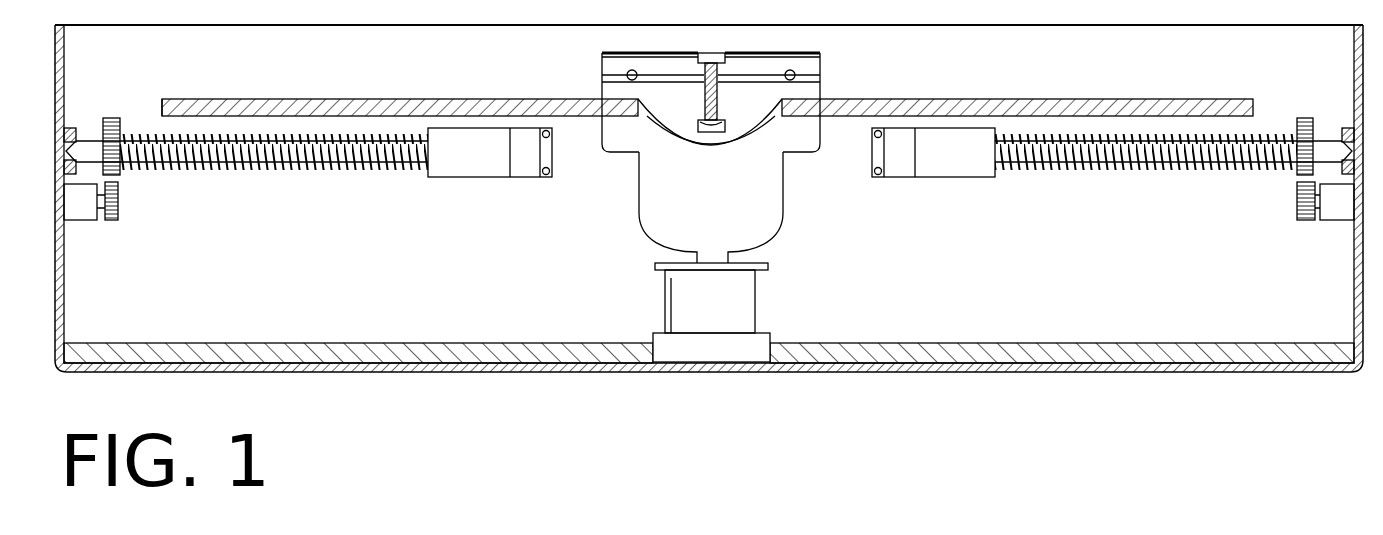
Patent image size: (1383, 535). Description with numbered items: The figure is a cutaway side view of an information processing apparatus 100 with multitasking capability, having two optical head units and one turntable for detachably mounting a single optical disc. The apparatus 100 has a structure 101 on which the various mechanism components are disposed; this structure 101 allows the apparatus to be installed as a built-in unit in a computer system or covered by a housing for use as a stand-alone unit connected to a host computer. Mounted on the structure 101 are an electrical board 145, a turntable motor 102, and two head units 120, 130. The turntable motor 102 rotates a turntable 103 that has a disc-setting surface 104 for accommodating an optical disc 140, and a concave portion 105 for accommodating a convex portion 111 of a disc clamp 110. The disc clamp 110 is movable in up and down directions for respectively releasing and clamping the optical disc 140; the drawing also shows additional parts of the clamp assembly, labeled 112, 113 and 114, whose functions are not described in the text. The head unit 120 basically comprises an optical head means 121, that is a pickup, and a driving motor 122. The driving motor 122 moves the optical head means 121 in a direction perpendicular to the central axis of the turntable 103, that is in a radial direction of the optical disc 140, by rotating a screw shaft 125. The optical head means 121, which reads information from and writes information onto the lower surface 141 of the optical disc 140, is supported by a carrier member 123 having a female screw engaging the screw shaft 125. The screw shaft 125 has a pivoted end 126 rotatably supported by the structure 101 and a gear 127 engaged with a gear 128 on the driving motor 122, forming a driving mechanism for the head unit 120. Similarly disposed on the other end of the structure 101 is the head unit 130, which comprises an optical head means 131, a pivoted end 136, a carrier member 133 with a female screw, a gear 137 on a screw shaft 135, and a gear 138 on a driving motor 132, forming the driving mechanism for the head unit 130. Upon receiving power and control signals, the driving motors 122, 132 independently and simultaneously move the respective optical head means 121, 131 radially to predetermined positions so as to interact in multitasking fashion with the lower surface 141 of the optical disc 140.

The apparatus 100 is at (596, 386).
The structure 101 is at (1075, 373).
The turntable motor 102 is at (748, 307).
The turntable 103 is at (790, 222).
The disc-setting surface 104 is at (612, 115).
The concave portion 105 is at (722, 145).
The disc clamp 110 is at (684, 108).
The convex portion 111 is at (745, 128).
The top plate 112 is at (615, 57).
The central guide post 113 is at (712, 55).
The pivot pin 114 is at (796, 74).
The head unit 120 is at (308, 167).
The optical head means 121 is at (525, 179).
The driving motor 122 is at (82, 208).
The carrier member 123 is at (452, 180).
The screw shaft 125 is at (355, 172).
The pivoted end 126 is at (80, 140).
The gear 127 is at (114, 117).
The gear 128 is at (112, 222).
The head unit 130 is at (1113, 167).
The optical head means 131 is at (898, 180).
The driving motor 132 is at (1338, 208).
The carrier member 133 is at (968, 179).
The screw shaft 135 is at (1065, 172).
The pivoted end 136 is at (1340, 140).
The gear 137 is at (1305, 117).
The gear 138 is at (1305, 222).
The optical disc 140 is at (285, 98).
The lower surface 141 is at (165, 115).
The electrical board 145 is at (1040, 344).